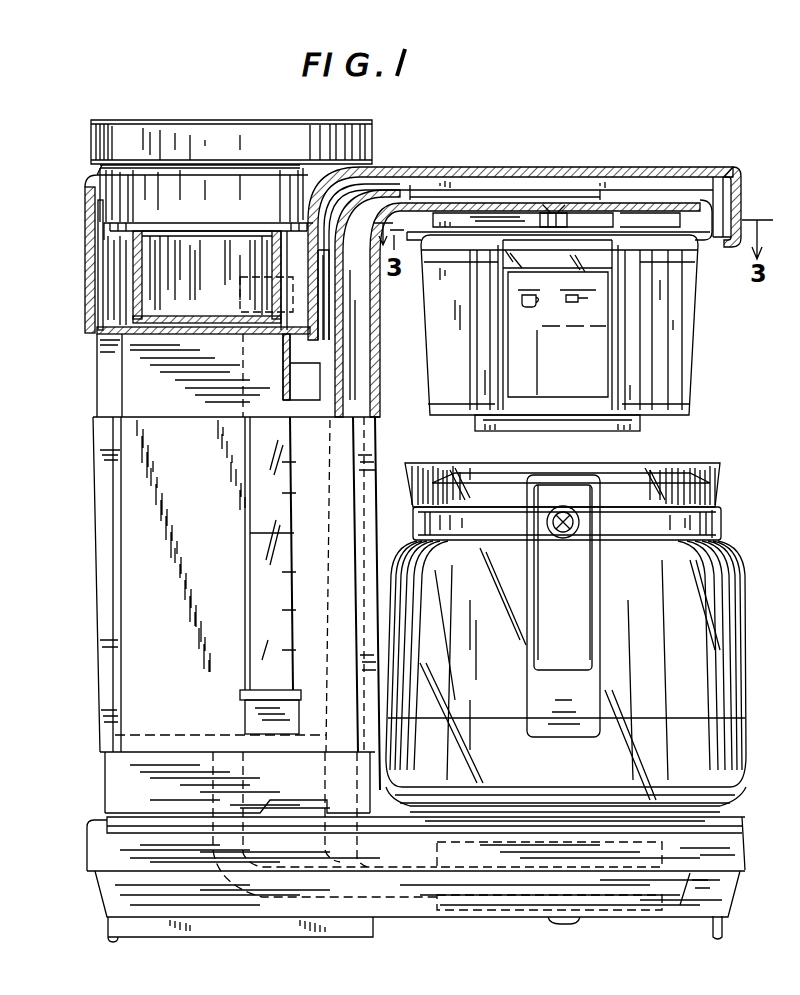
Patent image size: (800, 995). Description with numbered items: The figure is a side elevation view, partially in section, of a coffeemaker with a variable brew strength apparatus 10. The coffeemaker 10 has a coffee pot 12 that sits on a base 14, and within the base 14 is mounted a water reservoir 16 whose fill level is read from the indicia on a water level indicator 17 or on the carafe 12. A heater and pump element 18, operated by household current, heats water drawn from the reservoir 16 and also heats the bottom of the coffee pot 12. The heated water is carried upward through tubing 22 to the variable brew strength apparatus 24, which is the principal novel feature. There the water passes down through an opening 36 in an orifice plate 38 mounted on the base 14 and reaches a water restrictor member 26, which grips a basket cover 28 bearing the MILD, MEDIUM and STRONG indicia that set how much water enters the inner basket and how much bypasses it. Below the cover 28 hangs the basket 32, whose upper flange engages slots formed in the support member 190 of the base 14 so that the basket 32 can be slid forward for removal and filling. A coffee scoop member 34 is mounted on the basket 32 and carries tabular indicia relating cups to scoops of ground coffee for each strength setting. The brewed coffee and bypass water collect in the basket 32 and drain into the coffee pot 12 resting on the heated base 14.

The coffeemaker with a variable brew strength apparatus 10 is at (754, 883).
The coffee pot 12 is at (708, 562).
The base 14 is at (100, 672).
The water reservoir 16 is at (170, 634).
The water level indicator 17 is at (258, 522).
The heater and pump element 18 is at (676, 908).
The tubing 22 is at (372, 386).
The variable brew strength apparatus 24 is at (711, 334).
The water restrictor member 26 is at (538, 222).
The basket cover 28 is at (680, 228).
The basket 32 is at (495, 410).
The coffee scoop member 34 is at (508, 342).
The opening 36 is at (548, 208).
The orifice plate 38 is at (512, 200).
The support member 190 is at (738, 200).